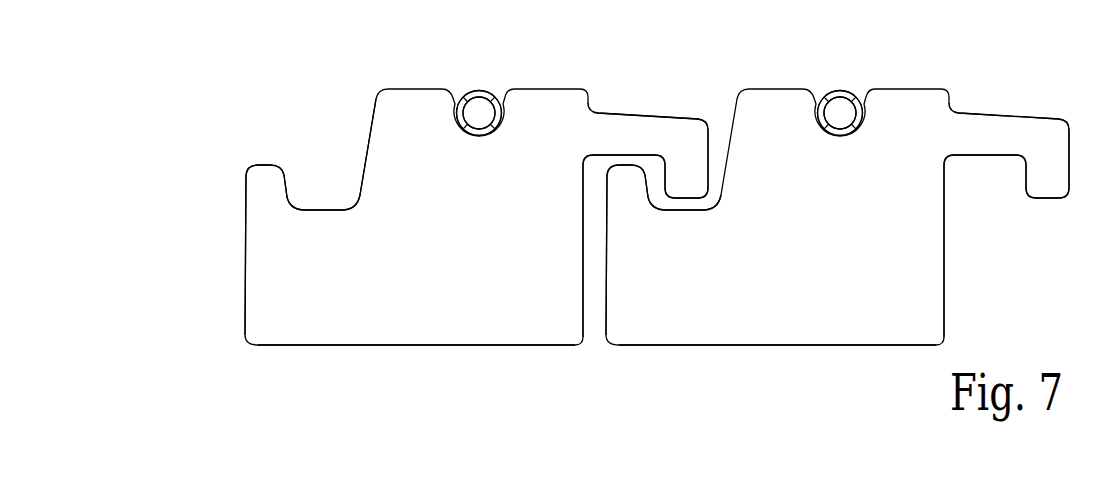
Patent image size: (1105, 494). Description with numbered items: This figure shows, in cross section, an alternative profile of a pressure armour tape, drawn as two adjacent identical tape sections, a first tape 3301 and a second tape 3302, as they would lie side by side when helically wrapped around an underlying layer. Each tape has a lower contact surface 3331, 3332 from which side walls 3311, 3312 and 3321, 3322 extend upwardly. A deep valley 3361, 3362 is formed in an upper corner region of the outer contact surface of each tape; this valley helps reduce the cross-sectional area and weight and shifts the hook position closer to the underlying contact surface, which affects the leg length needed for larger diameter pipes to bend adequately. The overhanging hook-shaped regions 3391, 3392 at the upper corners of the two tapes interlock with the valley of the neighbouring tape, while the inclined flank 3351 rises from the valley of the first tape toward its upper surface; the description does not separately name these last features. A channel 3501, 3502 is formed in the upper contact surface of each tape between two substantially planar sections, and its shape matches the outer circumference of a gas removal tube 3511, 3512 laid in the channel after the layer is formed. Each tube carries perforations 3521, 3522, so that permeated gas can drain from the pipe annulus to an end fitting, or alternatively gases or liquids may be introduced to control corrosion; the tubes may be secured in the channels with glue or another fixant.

The tape 3301 is at (420, 266).
The tape 3302 is at (812, 269).
The side wall 3311 is at (247, 290).
The side wall 3312 is at (609, 288).
The side wall 3321 is at (582, 272).
The side wall 3322 is at (945, 278).
The lower contact surface 3331 is at (412, 347).
The lower contact surface 3332 is at (767, 347).
The inclined flank of first link 3351 is at (384, 97).
The deep valley 3361 is at (318, 142).
The deep valley 3362 is at (715, 168).
The hook projection of first link 3391 is at (642, 93).
The hook projection of second link 3392 is at (1005, 93).
The channel 3501 is at (502, 85).
The channel 3502 is at (862, 83).
The gas removal tube 3511 is at (473, 90).
The gas removal tube 3512 is at (835, 88).
The perforations 3521 is at (485, 136).
The perforations 3522 is at (863, 130).